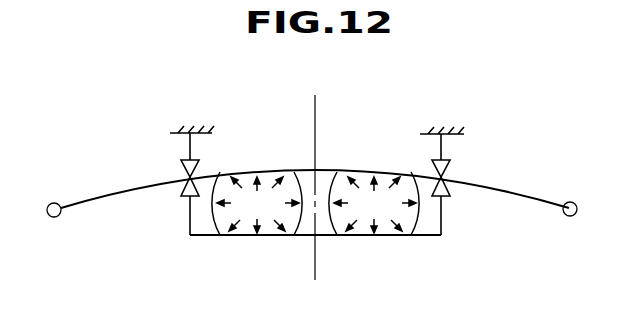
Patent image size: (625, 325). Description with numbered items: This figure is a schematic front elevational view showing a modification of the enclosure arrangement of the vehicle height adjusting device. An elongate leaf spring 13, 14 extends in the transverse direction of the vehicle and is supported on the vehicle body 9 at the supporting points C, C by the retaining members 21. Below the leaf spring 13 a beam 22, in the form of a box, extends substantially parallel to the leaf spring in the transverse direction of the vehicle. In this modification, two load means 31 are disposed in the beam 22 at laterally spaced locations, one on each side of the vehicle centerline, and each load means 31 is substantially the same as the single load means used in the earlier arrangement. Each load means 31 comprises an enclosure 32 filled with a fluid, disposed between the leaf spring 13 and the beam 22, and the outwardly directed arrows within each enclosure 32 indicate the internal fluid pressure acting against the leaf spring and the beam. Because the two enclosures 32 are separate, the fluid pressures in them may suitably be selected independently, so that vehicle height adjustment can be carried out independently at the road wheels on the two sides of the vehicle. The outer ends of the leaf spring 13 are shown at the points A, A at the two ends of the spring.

The vehicle body 9 is at (190, 131).
The supporting points C is at (185, 177).
The retaining members 21 is at (187, 198).
The beam 22 is at (297, 237).
The load means 31 is at (321, 201).
The enclosure 32 is at (218, 237).
The leaf spring 13 is at (315, 157).
The flexible sheet 14 is at (337, 170).
The pivot point A is at (50, 218).